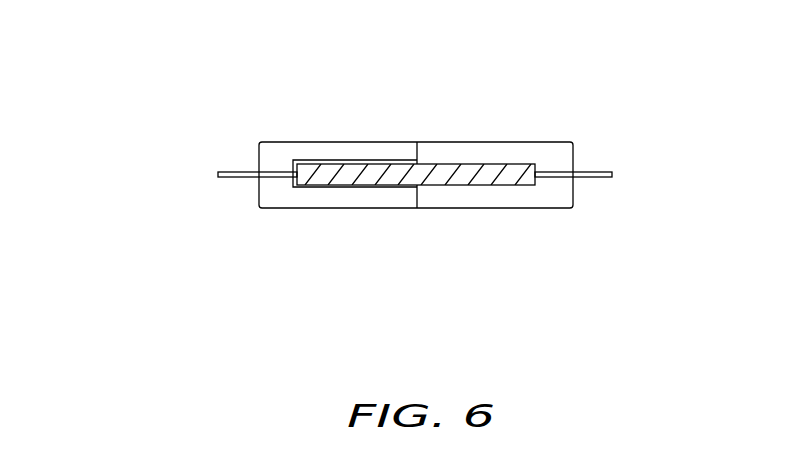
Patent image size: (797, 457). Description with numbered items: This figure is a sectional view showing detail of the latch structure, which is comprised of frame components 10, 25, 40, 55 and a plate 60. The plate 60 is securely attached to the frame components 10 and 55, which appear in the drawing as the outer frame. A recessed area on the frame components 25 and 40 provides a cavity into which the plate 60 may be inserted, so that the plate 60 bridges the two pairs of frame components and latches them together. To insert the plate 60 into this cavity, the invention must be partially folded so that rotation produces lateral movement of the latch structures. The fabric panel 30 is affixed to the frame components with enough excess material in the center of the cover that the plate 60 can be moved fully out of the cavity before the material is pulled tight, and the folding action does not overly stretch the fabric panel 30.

The frame component 10 is at (518, 198).
The frame component 25 is at (330, 196).
The fabric panel 30 is at (227, 172).
The frame component 40 is at (340, 152).
The frame component 55 is at (512, 152).
The plate 60 is at (392, 177).